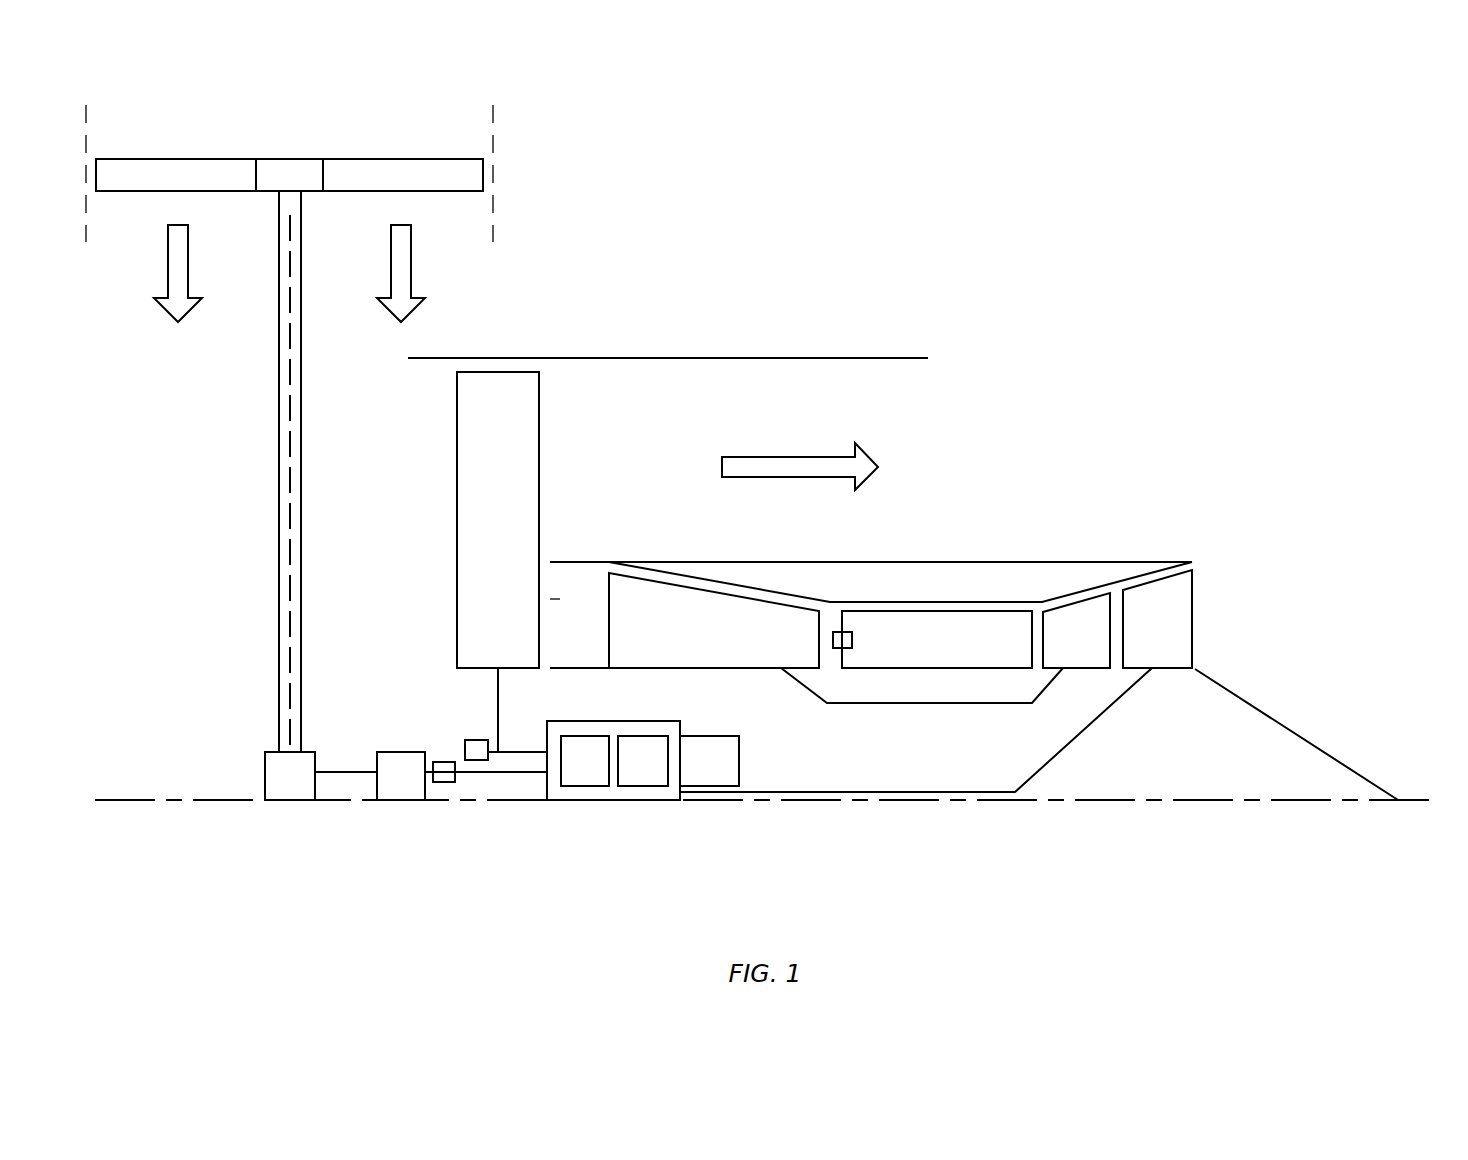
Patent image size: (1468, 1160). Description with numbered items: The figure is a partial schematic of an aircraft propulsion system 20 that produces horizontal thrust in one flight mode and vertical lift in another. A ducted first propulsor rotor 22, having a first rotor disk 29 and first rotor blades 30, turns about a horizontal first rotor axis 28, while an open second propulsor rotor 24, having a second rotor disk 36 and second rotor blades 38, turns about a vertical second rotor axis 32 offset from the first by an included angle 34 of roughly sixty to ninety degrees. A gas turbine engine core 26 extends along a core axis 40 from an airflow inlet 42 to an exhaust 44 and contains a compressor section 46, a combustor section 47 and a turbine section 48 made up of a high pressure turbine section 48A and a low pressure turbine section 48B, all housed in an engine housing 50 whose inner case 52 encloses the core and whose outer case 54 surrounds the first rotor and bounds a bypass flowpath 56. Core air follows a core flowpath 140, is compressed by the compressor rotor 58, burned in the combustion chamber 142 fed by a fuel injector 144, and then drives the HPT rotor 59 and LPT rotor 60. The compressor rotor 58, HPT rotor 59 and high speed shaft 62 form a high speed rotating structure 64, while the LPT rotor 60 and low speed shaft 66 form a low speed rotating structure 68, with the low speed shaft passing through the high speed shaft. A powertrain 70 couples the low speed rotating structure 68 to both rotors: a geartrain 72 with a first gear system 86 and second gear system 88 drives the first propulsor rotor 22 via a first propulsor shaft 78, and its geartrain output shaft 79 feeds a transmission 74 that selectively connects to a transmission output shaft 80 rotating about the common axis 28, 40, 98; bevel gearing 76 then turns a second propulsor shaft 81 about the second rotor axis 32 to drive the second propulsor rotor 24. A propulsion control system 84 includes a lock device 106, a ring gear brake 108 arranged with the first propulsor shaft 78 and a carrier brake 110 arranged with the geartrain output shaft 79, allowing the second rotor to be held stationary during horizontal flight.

The propulsion system 20 is at (1177, 218).
The first propulsor rotor 22 is at (455, 521).
The second propulsor rotor 24 is at (289, 194).
The gas turbine engine core 26 is at (974, 662).
The first rotor axis 28 is at (777, 846).
The first rotor disk 29 is at (498, 710).
The first rotor blades 30 is at (457, 502).
The second rotor axis 32 is at (288, 436).
The included angle 34 is at (288, 662).
The second rotor disk 36 is at (290, 158).
The second rotor blades 38 is at (177, 158).
The core axis 40 is at (777, 846).
The airflow inlet 42 is at (550, 599).
The exhaust 44 is at (1212, 632).
The compressor section 46 is at (735, 594).
The combustor section 47 is at (960, 600).
The turbine section 48 is at (1109, 549).
The high pressure turbine section 48A is at (1075, 592).
The low pressure turbine section 48B is at (1151, 581).
The engine housing 50 is at (675, 299).
The inner case 52 is at (902, 559).
The outer case 54 is at (712, 356).
The bypass flowpath 56 is at (634, 440).
The compressor rotor 58 is at (765, 670).
The HPT rotor 59 is at (1082, 673).
The LPT rotor 60 is at (1173, 673).
The high speed shaft 62 is at (928, 703).
The high speed rotating structure 64 is at (820, 709).
The low speed shaft 66 is at (892, 800).
The low speed rotating structure 68 is at (995, 796).
The powertrain 70 is at (409, 805).
The geartrain 72 is at (603, 804).
The transmission 74 is at (386, 791).
The gearing 76 is at (275, 791).
The first propulsor shaft 78 is at (530, 748).
The geartrain output shaft 79 is at (498, 775).
The transmission output shaft 80 is at (343, 775).
The second propulsor shaft 81 is at (279, 552).
The propulsion control system 84 is at (634, 834).
The first gear system 86 is at (570, 775).
The second gear system 88 is at (628, 775).
The axis 98 is at (1422, 807).
The lock device 106 is at (688, 775).
The ring gear brake 108 is at (467, 742).
The carrier brake 110 is at (443, 785).
The core flowpath 140 is at (598, 641).
The combustion chamber 142 is at (1009, 657).
The fuel injector 144 is at (852, 640).